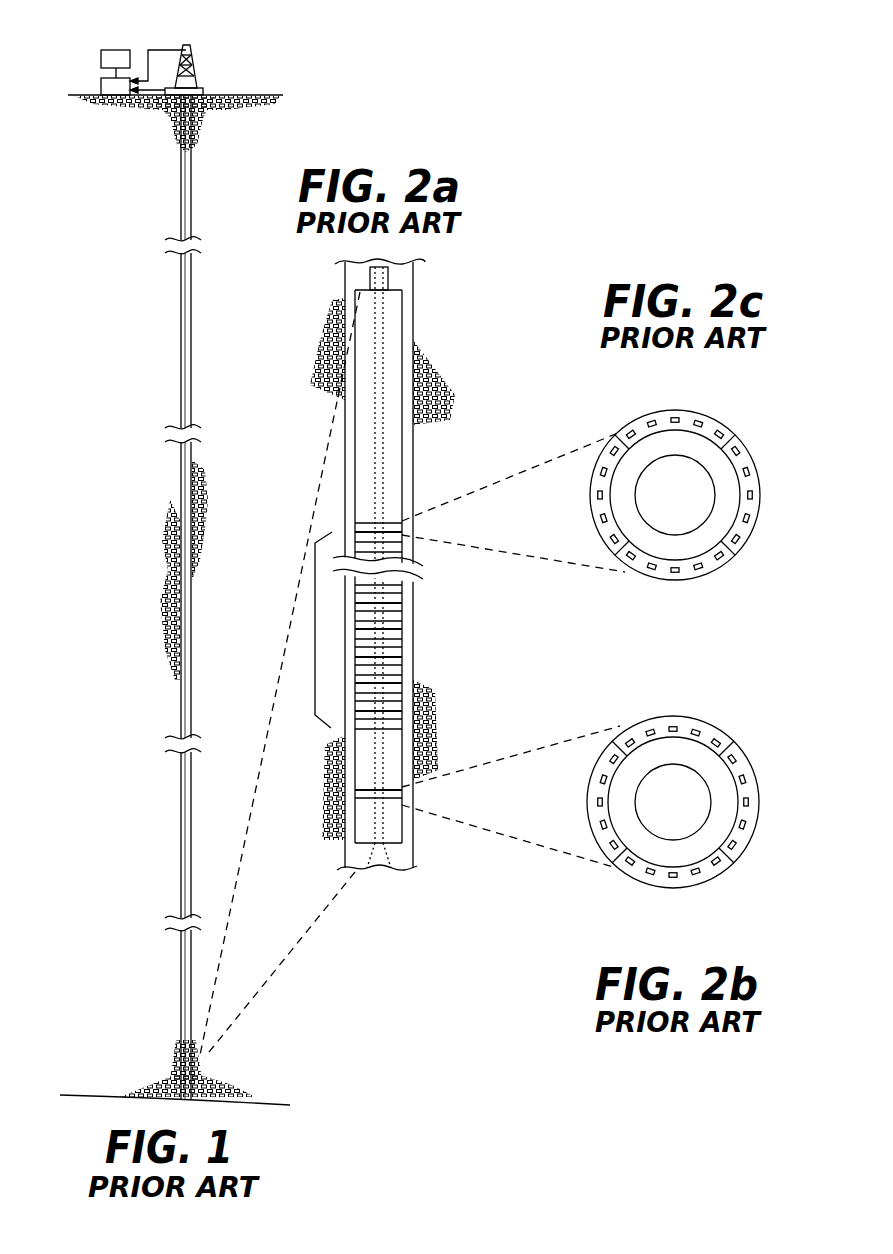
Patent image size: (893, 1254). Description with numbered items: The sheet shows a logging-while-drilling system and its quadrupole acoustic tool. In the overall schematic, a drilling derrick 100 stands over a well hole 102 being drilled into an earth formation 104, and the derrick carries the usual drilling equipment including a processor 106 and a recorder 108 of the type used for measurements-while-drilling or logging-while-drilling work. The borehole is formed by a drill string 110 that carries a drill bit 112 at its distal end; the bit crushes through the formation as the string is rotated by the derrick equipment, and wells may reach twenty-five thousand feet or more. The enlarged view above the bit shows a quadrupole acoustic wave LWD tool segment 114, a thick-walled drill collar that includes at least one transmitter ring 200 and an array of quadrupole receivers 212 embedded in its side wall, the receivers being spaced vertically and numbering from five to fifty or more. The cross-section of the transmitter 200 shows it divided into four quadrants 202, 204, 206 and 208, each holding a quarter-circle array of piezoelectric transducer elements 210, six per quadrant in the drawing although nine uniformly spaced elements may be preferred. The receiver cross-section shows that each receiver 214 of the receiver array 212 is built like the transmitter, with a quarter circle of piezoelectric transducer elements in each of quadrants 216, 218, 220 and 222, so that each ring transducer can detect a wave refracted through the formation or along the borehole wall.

In FIG. 1, the drilling derrick 100 is at (196, 70).
In FIG. 1, the well hole 102 is at (168, 130).
In FIG. 2a, the well hole 102 is at (345, 290).
In FIG. 1, the earth formation 104 is at (234, 165).
In FIG. 1, the processor 106 is at (101, 90).
In FIG. 1, the recorder 108 is at (113, 49).
In FIG. 1, the drill string 110 is at (181, 352).
In FIG. 1, the drill bit 112 is at (240, 1090).
In FIG. 1, the quadrupole acoustic wave LWD tool segment 114 is at (172, 1080).
In FIG. 2a, the quadrupole acoustic wave LWD tool segment 114 is at (395, 322).
In FIG. 2a, the transmitter ring 200 is at (383, 800).
In FIG. 2b, the transmitter ring 200 is at (765, 804).
In FIG. 2b, the transmitter quadrant 202 is at (672, 722).
In FIG. 2b, the transmitter quadrant 204 is at (740, 845).
In FIG. 2b, the transmitter quadrant 206 is at (672, 887).
In FIG. 2b, the transmitter quadrant 208 is at (592, 806).
In FIG. 2b, the piezoelectric transducer elements 210 is at (746, 770).
In FIG. 2a, the array of quadrupole receivers 212 is at (314, 684).
In FIG. 2c, the receiver 214 is at (722, 426).
In FIG. 2c, the receiver quadrant 216 is at (673, 408).
In FIG. 2c, the receiver quadrant 218 is at (752, 508).
In FIG. 2c, the receiver quadrant 220 is at (670, 582).
In FIG. 2c, the receiver quadrant 222 is at (590, 500).